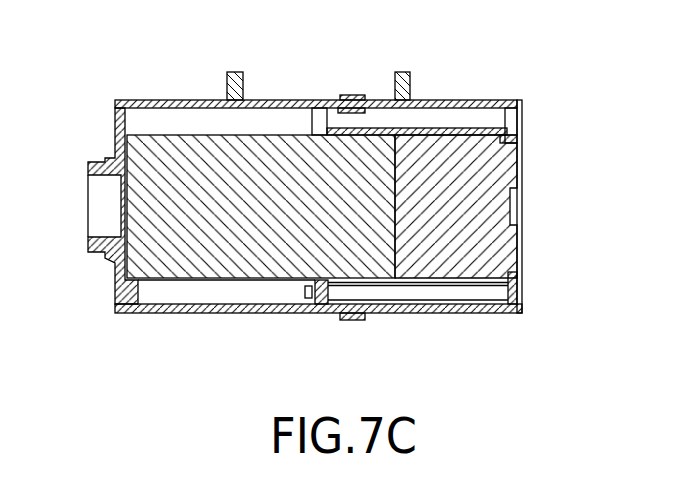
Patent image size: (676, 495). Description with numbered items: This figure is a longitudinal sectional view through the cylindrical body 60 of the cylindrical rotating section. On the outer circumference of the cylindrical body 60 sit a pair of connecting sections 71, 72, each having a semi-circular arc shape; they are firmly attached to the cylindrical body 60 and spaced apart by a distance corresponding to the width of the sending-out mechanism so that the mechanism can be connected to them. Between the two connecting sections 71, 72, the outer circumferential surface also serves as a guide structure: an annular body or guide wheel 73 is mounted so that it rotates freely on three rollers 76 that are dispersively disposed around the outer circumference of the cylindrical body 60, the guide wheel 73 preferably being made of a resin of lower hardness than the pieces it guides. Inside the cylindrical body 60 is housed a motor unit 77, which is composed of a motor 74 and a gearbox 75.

The cylindrical body 60 is at (483, 88).
The connecting section 71 is at (406, 72).
The connecting section 72 is at (229, 72).
The annular body (guide wheel) 73 is at (345, 96).
The motor 74 is at (203, 271).
The gearbox 75 is at (443, 270).
The roller 76 is at (358, 94).
The motor unit 77 is at (263, 286).